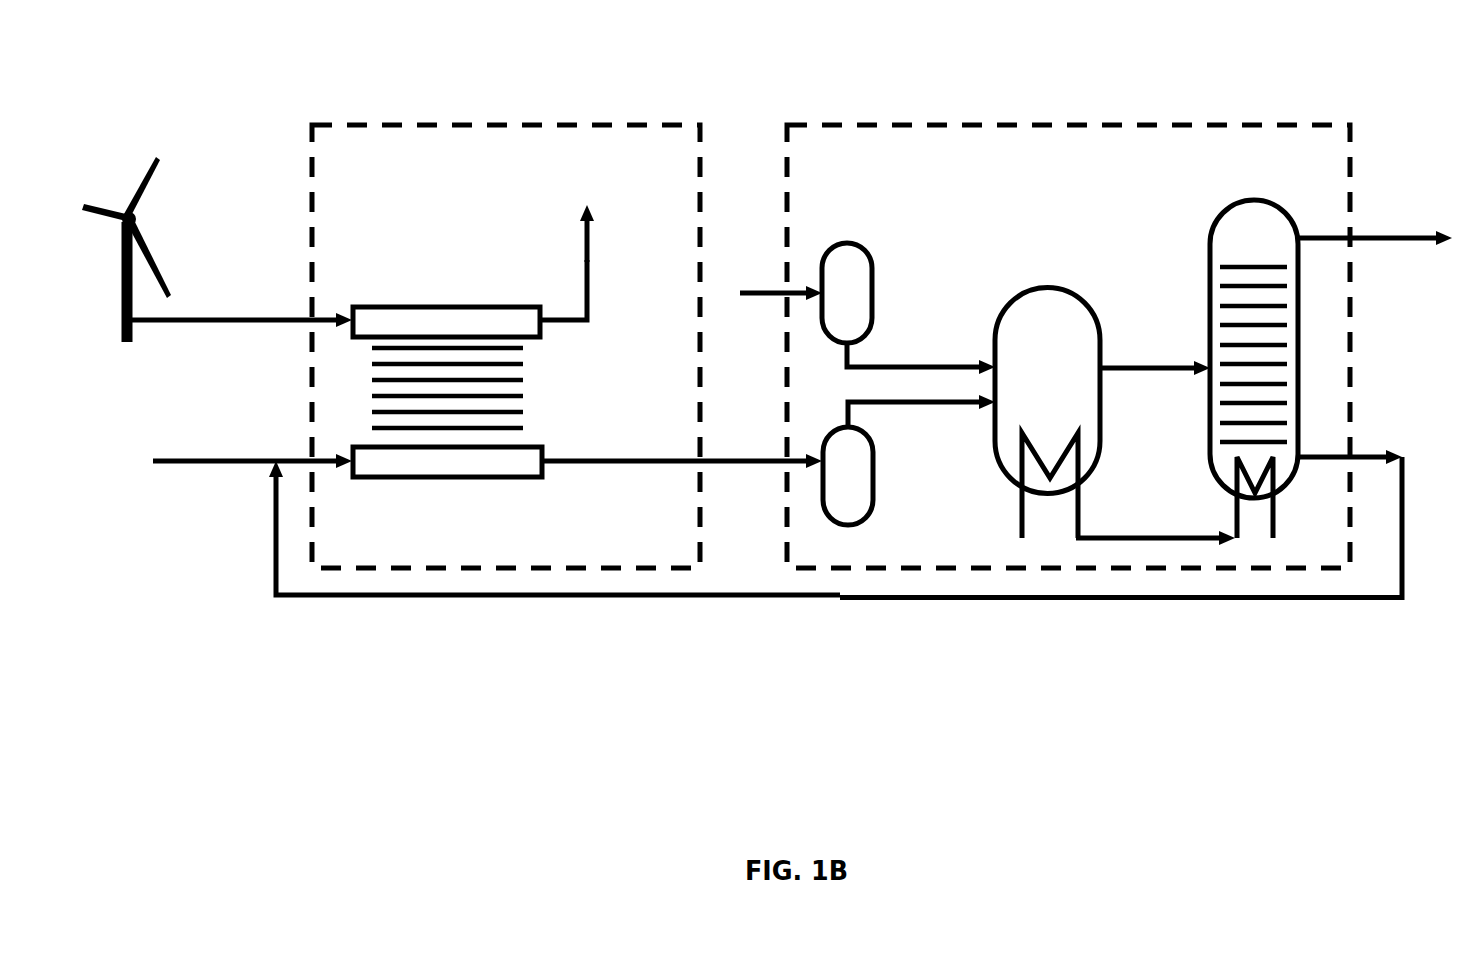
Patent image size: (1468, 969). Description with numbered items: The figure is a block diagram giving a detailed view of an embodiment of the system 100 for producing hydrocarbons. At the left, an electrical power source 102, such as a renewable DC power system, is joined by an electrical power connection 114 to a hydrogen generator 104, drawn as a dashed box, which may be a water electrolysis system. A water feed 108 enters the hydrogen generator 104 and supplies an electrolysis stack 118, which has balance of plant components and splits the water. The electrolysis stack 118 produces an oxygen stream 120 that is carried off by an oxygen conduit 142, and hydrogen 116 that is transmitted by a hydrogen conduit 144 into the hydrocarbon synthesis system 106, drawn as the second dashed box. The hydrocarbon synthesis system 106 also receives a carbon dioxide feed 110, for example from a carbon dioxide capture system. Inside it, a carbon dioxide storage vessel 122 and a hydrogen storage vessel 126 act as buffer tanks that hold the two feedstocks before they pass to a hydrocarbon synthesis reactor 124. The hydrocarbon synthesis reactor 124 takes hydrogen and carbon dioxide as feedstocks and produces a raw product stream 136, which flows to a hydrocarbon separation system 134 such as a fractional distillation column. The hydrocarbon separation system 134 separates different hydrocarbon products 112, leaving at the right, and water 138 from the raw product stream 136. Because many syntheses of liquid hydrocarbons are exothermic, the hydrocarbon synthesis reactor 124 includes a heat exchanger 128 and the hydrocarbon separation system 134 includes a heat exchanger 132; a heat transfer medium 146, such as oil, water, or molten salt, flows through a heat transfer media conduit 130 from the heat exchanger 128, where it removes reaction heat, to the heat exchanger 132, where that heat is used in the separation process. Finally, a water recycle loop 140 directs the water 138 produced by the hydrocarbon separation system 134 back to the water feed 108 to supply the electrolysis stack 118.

The system 100 is at (645, 76).
The electrical power source 102 is at (132, 210).
The hydrogen generator 104 is at (381, 172).
The hydrocarbon synthesis system 106 is at (852, 172).
The water feed 108 is at (208, 456).
The carbon dioxide feed 110 is at (774, 292).
The hydrocarbon products 112 is at (1404, 234).
The electrical power connection 114 is at (257, 318).
The hydrogen 116 is at (628, 459).
The electrolysis stack 118 is at (443, 305).
The oxygen stream 120 is at (585, 250).
The carbon dioxide storage vessel 122 is at (870, 250).
The hydrocarbon synthesis reactor 124 is at (1050, 288).
The hydrogen storage vessel 126 is at (872, 477).
The heat exchanger 128 is at (1053, 440).
The heat transfer media conduit 130 is at (1175, 530).
The heat exchanger 132 is at (1275, 503).
The hydrocarbon separation system 134 is at (1225, 214).
The raw product stream 136 is at (1170, 365).
The water 138 is at (935, 600).
The water recycle loop 140 is at (735, 600).
The oxygen conduit 142 is at (590, 292).
The hydrogen conduit 144 is at (677, 459).
The heat transfer medium 146 is at (1133, 530).